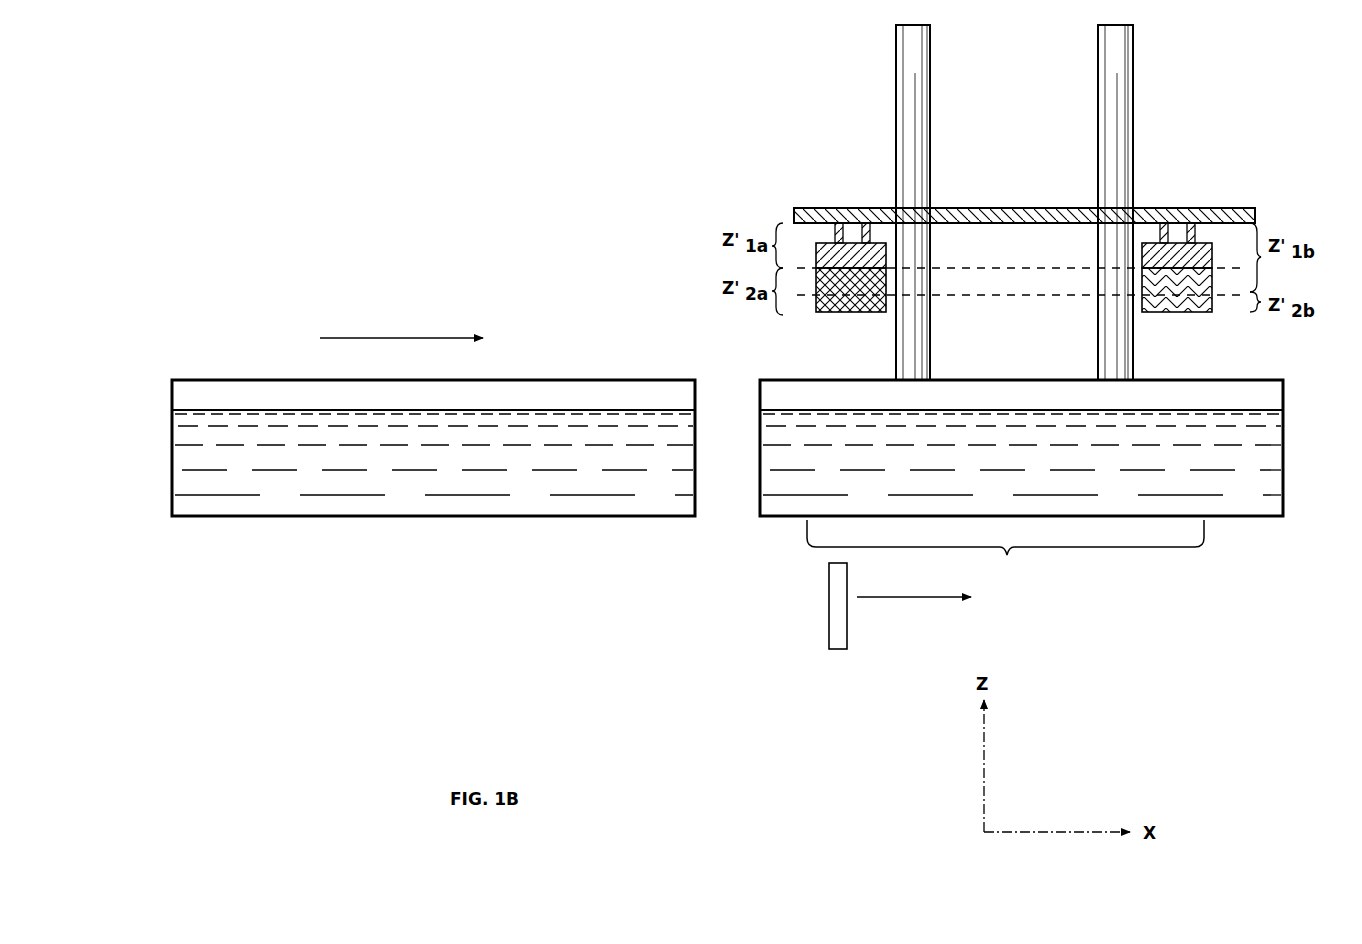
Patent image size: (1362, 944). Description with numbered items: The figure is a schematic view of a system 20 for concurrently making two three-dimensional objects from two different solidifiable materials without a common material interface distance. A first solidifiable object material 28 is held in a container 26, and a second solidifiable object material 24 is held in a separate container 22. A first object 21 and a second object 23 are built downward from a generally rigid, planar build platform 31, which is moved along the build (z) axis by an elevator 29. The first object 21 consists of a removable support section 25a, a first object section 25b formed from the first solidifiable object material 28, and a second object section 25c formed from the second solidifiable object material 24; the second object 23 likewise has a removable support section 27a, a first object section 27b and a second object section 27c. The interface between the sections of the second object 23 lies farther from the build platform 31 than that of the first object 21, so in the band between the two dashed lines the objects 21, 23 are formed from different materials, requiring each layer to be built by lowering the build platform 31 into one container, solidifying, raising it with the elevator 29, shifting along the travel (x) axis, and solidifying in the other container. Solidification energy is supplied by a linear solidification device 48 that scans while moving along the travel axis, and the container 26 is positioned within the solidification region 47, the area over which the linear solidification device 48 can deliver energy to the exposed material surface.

The system 20 is at (427, 252).
The first object 21 is at (888, 253).
The container 22 is at (305, 516).
The second object 23 is at (1139, 261).
The second solidifiable object material 24 is at (438, 459).
The removable support section 25a is at (853, 238).
The first object section 25b is at (851, 255).
The second object section 25c is at (848, 312).
The container 26 is at (1283, 450).
The removable support section 27a is at (1178, 238).
The first object section 27b is at (1177, 255).
The second object section 27c is at (1170, 312).
The first solidifiable object material 28 is at (1038, 459).
The elevator 29 is at (1098, 90).
The build platform 31 is at (818, 208).
The solidification region 47 is at (1005, 554).
The linear solidification device 48 is at (829, 613).